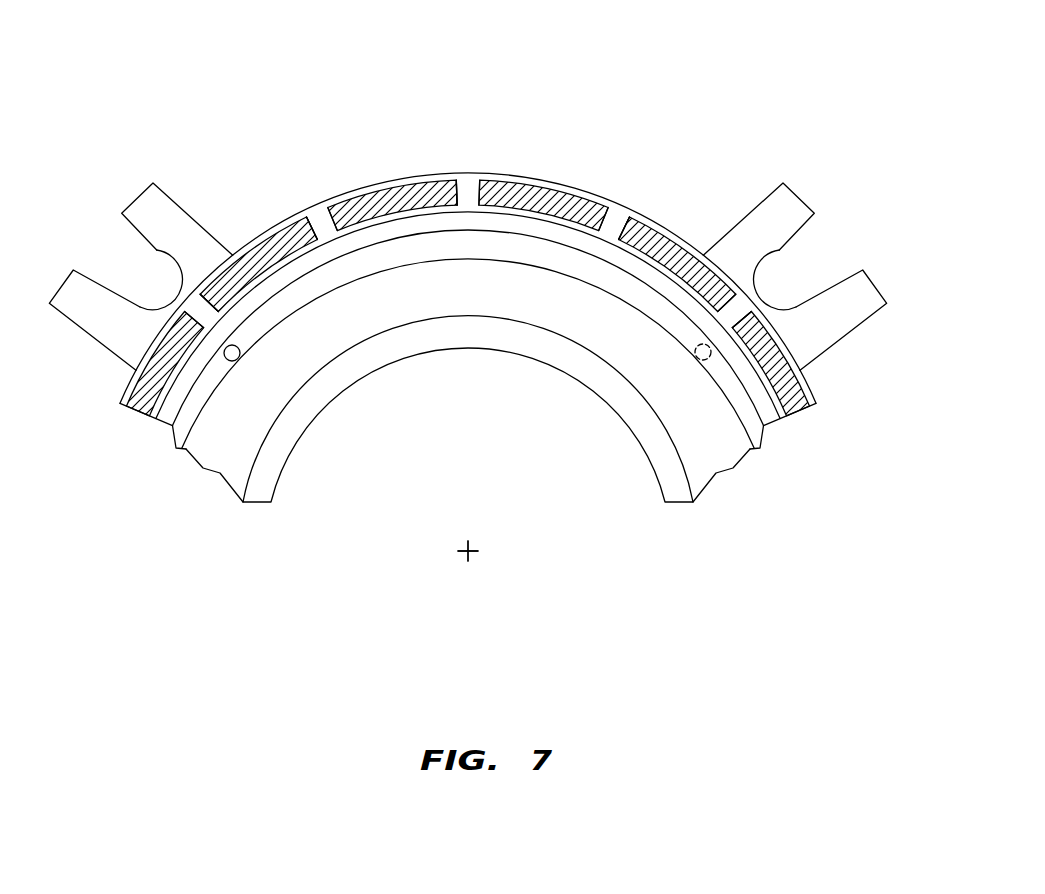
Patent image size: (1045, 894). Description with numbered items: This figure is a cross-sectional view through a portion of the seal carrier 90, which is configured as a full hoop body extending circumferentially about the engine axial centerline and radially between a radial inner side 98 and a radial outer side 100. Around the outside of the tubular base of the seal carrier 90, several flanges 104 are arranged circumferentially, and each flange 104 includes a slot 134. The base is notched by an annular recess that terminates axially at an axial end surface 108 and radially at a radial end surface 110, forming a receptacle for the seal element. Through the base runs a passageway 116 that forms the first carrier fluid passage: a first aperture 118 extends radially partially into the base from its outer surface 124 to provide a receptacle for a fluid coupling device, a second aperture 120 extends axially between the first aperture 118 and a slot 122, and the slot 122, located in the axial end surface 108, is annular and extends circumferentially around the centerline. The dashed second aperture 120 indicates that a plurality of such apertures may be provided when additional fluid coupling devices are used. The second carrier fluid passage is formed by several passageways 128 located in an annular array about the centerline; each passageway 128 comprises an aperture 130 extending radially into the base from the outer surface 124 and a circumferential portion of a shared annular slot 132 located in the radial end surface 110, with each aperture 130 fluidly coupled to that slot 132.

The seal carrier 90 is at (118, 77).
The radial inner side 98 is at (645, 463).
The radial outer side 100 is at (873, 284).
The flange 104 is at (180, 188).
The axial end surface 108 is at (710, 472).
The radial end surface 110 is at (752, 450).
The passageway 116 is at (192, 412).
The first aperture 118 is at (482, 564).
The second aperture 120 is at (236, 361).
The slot 122 is at (181, 451).
The outer surface 124 is at (806, 370).
The passageway 128 is at (318, 200).
The aperture 130 is at (308, 212).
The slot 132 is at (155, 415).
The slot 134 is at (115, 238).